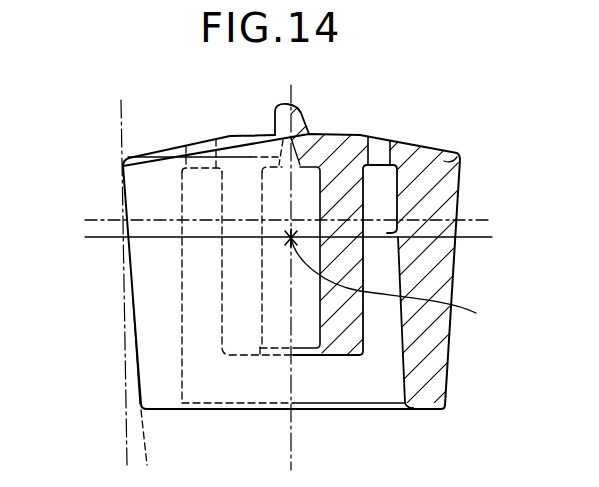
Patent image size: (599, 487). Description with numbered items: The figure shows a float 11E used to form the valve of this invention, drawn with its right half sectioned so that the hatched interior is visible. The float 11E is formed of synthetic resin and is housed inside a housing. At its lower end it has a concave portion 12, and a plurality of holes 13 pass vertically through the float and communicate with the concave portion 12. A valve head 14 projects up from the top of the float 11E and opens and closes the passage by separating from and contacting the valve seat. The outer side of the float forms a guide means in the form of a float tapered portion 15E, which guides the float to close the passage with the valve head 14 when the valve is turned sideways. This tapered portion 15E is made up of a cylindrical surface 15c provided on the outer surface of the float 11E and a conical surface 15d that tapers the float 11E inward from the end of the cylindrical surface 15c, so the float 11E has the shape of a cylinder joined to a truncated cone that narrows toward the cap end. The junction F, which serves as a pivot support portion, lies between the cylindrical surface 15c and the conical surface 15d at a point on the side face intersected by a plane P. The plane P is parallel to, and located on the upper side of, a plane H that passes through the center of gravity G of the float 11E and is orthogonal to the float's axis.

The float 11E is at (458, 153).
The concave portion 12 is at (380, 343).
The holes 13 is at (207, 153).
The valve head 14 is at (281, 113).
The float tapered portion 15E is at (121, 290).
The cylindrical surface 15c is at (122, 196).
The conical surface 15d is at (135, 346).
The junction F is at (85, 218).
The plane H is at (474, 238).
The plane P is at (480, 218).
The center of gravity G is at (396, 285).